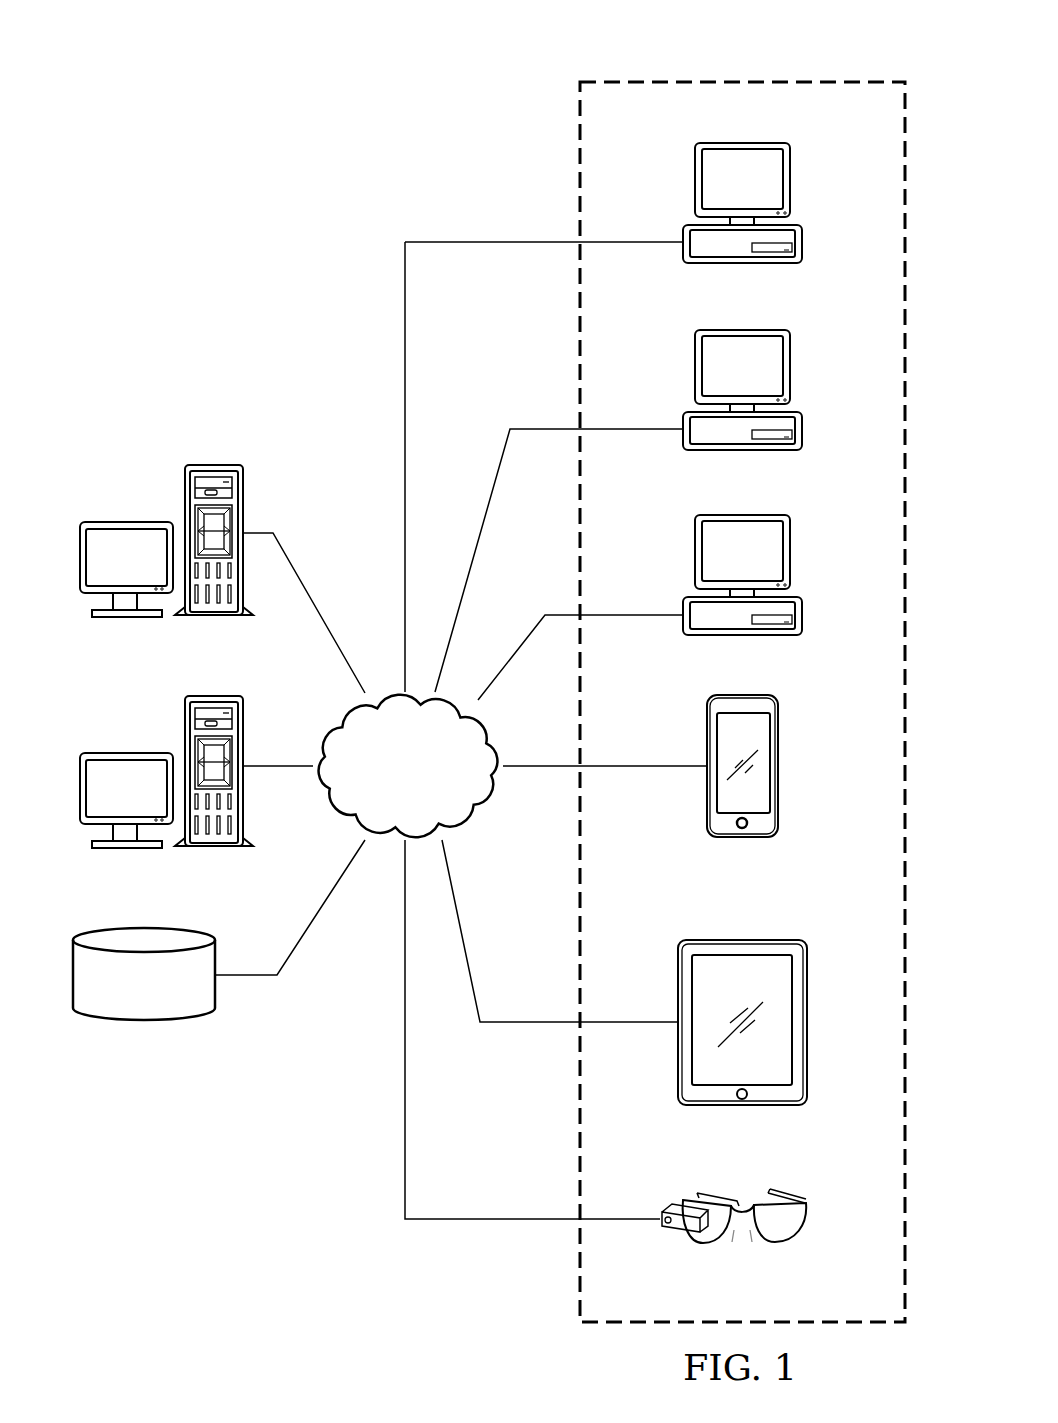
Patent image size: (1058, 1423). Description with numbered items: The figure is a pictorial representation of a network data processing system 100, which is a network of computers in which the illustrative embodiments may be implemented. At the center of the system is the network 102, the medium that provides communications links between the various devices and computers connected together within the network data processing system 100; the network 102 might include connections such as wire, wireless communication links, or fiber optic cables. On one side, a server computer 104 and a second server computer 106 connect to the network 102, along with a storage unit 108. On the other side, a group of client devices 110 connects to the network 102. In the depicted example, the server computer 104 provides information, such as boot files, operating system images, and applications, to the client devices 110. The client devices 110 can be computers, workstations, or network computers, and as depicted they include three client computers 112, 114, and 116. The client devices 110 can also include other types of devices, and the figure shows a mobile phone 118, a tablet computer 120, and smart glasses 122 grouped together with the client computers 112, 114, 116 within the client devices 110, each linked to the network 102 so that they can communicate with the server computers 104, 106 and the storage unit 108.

The network data processing system 100 is at (266, 331).
The network 102 is at (427, 800).
The server computer 104 is at (128, 522).
The server computer 106 is at (128, 753).
The storage unit 108 is at (142, 1023).
The client devices 110 is at (813, 74).
The client computer 112 is at (790, 178).
The client computer 114 is at (790, 363).
The client computer 116 is at (790, 550).
The mobile phone 118 is at (778, 783).
The tablet computer 120 is at (808, 1035).
The smart glasses 122 is at (808, 1223).